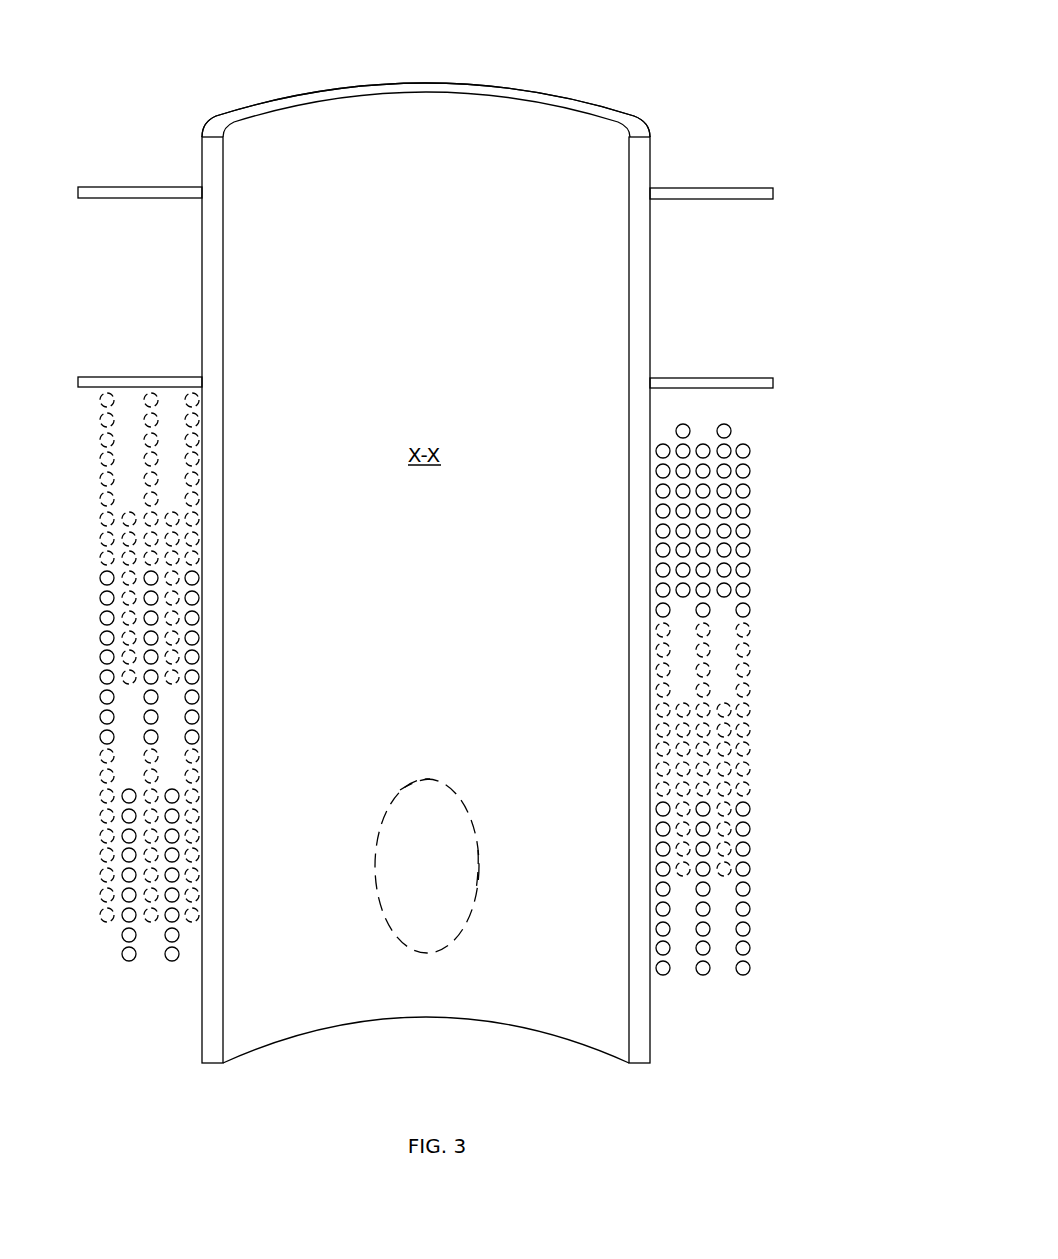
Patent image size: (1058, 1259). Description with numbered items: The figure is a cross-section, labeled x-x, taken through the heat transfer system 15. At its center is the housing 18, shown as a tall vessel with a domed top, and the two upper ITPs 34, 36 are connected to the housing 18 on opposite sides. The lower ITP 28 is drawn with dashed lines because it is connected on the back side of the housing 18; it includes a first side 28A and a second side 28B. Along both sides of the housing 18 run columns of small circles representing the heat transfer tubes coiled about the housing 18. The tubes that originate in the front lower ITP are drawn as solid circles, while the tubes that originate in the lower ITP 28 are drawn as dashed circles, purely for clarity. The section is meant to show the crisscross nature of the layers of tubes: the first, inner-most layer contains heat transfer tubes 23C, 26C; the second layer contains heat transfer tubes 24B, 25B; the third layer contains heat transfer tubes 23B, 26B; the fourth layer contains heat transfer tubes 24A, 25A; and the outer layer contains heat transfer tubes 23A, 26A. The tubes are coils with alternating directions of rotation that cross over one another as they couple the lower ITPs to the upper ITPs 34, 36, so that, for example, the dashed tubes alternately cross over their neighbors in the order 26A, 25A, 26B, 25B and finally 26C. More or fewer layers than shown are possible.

The heat transfer system 15 is at (652, 58).
The housing 18 is at (517, 83).
The upper ITP 34 is at (105, 175).
The upper ITP 36 is at (713, 185).
The heat transfer tube 23A is at (100, 740).
The heat transfer tube 23B is at (140, 747).
The heat transfer tube 23C is at (200, 745).
The heat transfer tube 24A is at (122, 962).
The heat transfer tube 24B is at (168, 962).
The heat transfer tube 25A is at (123, 513).
The heat transfer tube 25B is at (173, 510).
The heat transfer tube 26A is at (100, 392).
The heat transfer tube 26B is at (148, 392).
The heat transfer tube 26C is at (191, 392).
The lower ITP 28 is at (462, 940).
The first side 28A is at (475, 892).
The second side 28B is at (385, 843).